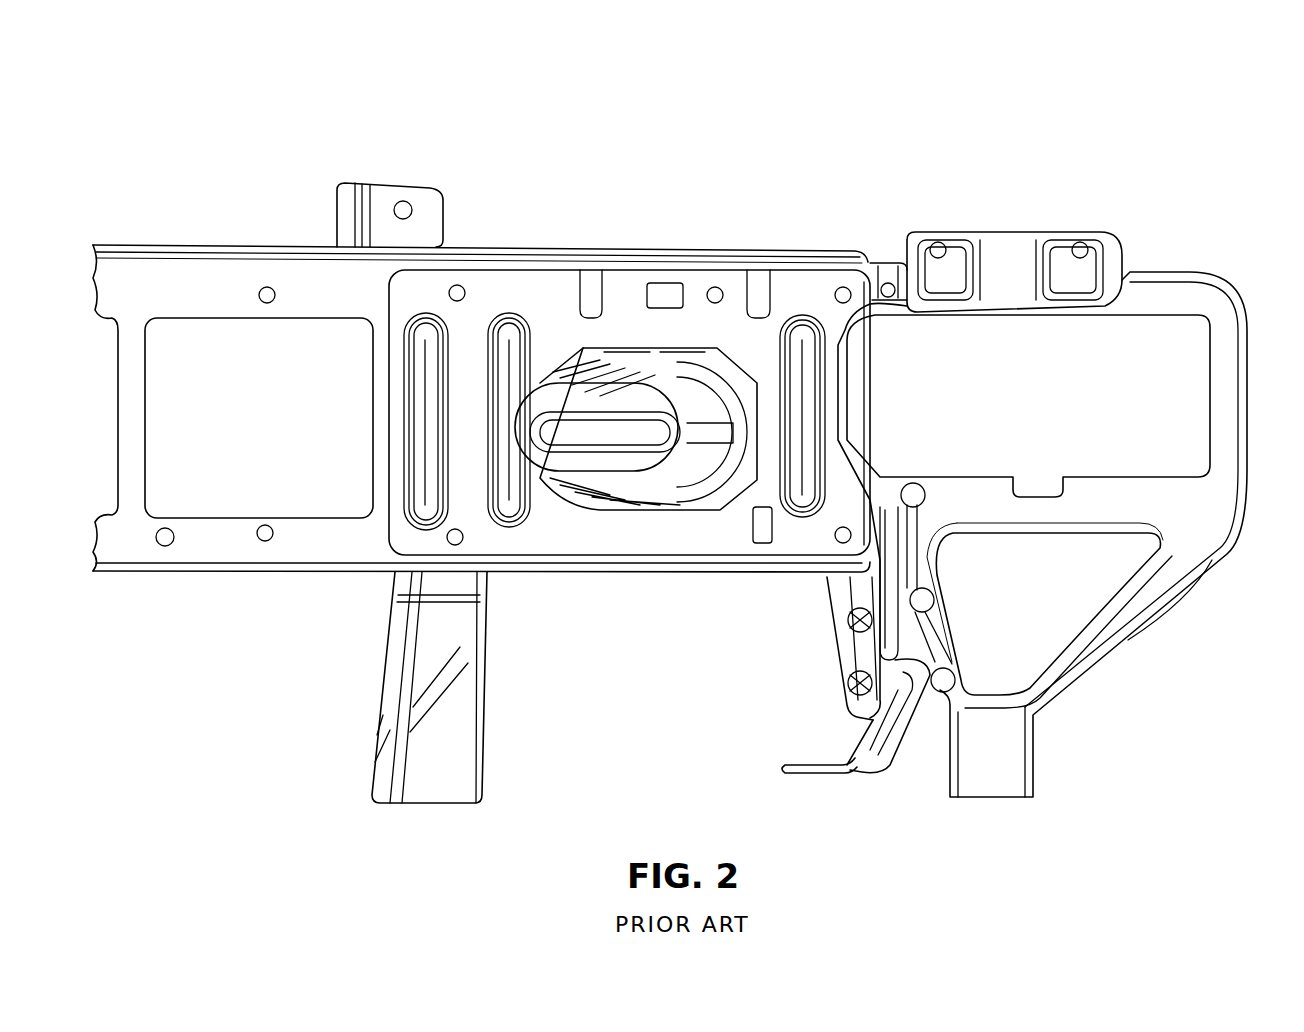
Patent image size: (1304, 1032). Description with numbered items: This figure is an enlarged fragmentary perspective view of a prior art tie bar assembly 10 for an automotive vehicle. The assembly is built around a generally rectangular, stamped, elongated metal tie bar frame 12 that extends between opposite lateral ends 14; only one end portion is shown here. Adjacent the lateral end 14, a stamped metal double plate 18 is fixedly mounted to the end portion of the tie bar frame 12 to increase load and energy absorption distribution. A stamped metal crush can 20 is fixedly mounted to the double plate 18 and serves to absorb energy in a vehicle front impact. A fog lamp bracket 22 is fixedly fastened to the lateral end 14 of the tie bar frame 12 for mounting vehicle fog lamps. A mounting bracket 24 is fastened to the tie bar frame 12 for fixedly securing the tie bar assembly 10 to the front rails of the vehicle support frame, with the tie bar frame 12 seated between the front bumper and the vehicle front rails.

The tie bar assembly 10 is at (887, 100).
The tie bar frame 12 is at (178, 245).
The lateral end 14 is at (853, 250).
The double plate 18 is at (545, 275).
The crush can 20 is at (632, 505).
The fog lamp bracket 22 is at (1197, 290).
The mounting bracket 24 is at (468, 750).